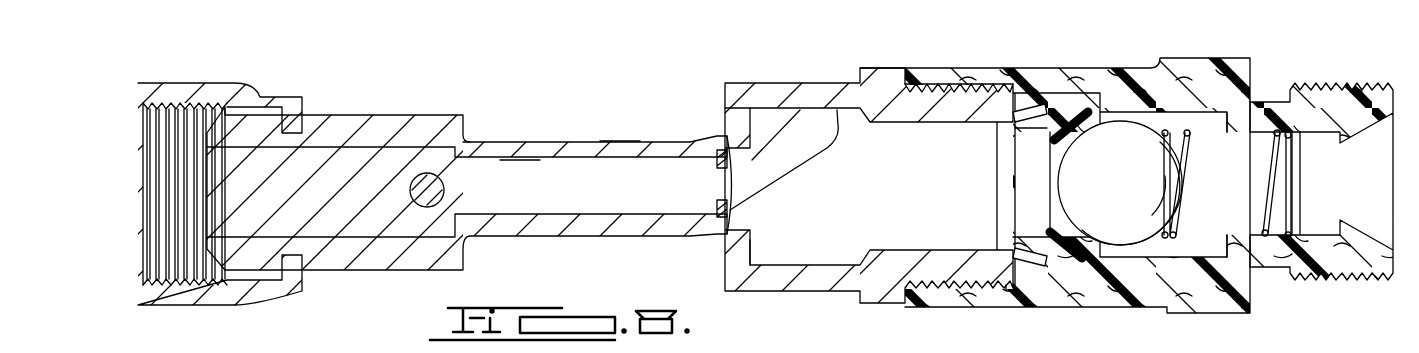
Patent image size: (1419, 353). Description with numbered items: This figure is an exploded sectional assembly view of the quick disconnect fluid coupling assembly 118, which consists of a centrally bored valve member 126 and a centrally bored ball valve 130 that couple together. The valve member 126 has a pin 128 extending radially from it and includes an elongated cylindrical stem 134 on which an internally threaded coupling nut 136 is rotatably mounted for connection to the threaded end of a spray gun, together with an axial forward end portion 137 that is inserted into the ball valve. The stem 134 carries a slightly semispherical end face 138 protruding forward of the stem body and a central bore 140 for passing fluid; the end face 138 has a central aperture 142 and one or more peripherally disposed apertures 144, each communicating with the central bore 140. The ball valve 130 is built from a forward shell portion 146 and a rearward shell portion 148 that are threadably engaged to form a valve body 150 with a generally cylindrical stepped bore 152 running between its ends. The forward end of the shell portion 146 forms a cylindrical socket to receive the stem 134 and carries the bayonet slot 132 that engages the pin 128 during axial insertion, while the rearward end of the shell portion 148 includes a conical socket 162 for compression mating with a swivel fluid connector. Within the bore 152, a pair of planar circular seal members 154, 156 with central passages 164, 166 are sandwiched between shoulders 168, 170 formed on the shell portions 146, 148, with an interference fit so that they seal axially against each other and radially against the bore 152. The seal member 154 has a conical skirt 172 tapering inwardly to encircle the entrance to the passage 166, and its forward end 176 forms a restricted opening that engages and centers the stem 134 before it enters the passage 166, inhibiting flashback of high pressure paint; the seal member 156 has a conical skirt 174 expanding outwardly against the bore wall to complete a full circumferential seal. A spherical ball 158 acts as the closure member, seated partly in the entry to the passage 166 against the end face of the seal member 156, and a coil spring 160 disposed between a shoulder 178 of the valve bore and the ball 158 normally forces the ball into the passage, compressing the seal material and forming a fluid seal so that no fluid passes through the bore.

The quick disconnect fluid coupling assembly 118 is at (667, 83).
The valve member 126 is at (433, 86).
The pin 128 is at (410, 192).
The ball valve 130 is at (705, 84).
The bayonet slot 132 is at (836, 132).
The stem 134 is at (493, 145).
The coupling nut 136 is at (238, 84).
The axial forward end portion 137 is at (618, 148).
The end face 138 is at (752, 230).
The central bore 140 is at (540, 162).
The central aperture 142 is at (722, 204).
The peripherally disposed apertures 144 is at (722, 140).
The forward shell portion 146 is at (758, 92).
The rearward shell portion 148 is at (975, 78).
The valve body 150 is at (888, 69).
The stepped bore 152 is at (1190, 117).
The seal member 154 is at (1013, 100).
The seal member 156 is at (1067, 108).
The spherical ball 158 is at (1135, 217).
The coil spring 160 is at (1272, 184).
The conical socket 162 is at (1343, 136).
The central passage 164 is at (1040, 130).
The central passage 166 is at (1067, 135).
The shoulder 168 is at (1006, 290).
The shoulder 170 is at (1062, 265).
The conical skirt 172 is at (1025, 255).
The conical skirt 174 is at (1080, 250).
The forward end 176 is at (1053, 233).
The shoulder 178 is at (1288, 220).